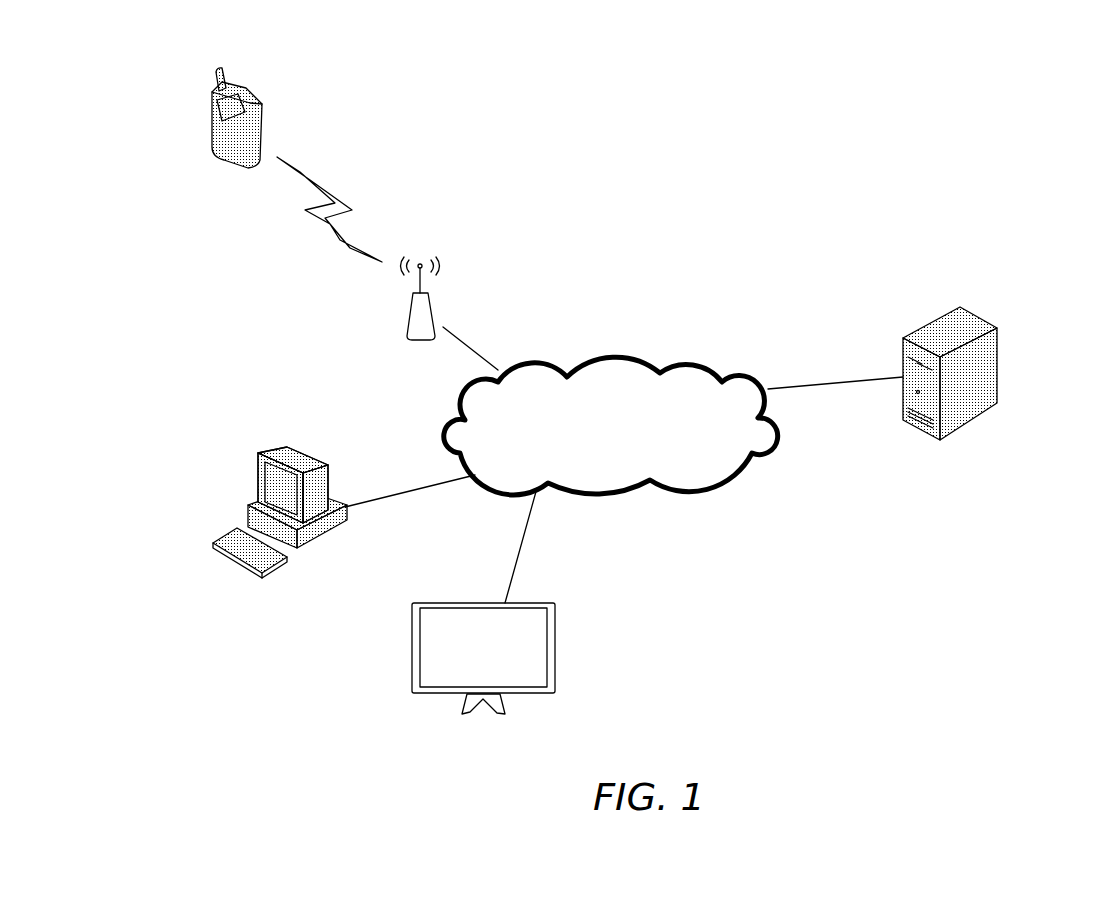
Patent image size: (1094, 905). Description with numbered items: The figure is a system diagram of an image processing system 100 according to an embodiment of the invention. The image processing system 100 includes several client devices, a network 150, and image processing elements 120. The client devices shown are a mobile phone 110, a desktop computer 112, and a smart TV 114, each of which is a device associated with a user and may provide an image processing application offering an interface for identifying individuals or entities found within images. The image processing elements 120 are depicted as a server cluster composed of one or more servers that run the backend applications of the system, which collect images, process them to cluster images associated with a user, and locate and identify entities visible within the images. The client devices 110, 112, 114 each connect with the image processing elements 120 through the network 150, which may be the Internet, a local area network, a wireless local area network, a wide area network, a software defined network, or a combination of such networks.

The image processing system 100 is at (752, 202).
The mobile phone 110 is at (249, 91).
The desktop computer 112 is at (240, 567).
The smart TV 114 is at (420, 693).
The image processing elements 120 is at (967, 323).
The network 150 is at (645, 483).